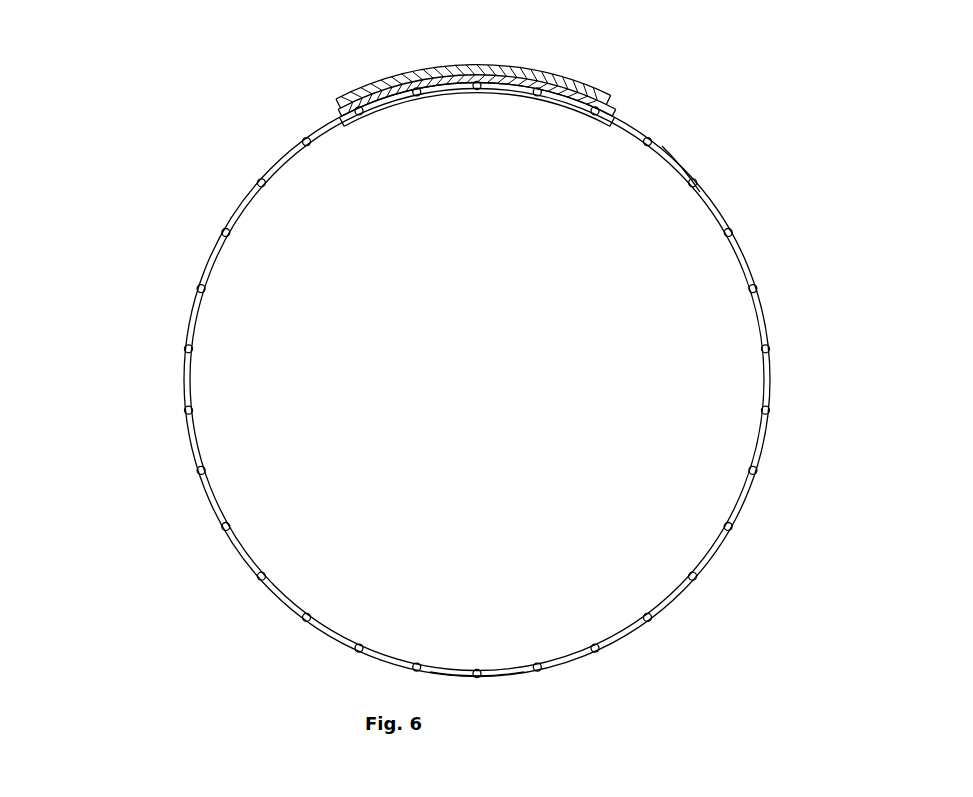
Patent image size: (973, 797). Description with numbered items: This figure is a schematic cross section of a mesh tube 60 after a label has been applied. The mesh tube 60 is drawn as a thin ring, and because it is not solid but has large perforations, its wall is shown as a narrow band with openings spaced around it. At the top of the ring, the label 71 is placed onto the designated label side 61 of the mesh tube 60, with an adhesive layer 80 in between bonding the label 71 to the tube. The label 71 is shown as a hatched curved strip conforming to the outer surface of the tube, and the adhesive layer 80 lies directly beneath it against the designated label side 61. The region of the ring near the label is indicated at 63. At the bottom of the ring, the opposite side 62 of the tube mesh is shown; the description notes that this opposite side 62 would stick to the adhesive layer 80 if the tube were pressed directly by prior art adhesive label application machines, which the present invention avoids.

The mesh tube 60 is at (772, 435).
The designated label side 61 is at (468, 92).
The opposite side 62 is at (462, 670).
The inner surface section 63 is at (677, 162).
The label 71 is at (547, 72).
The adhesive layer 80 is at (622, 112).